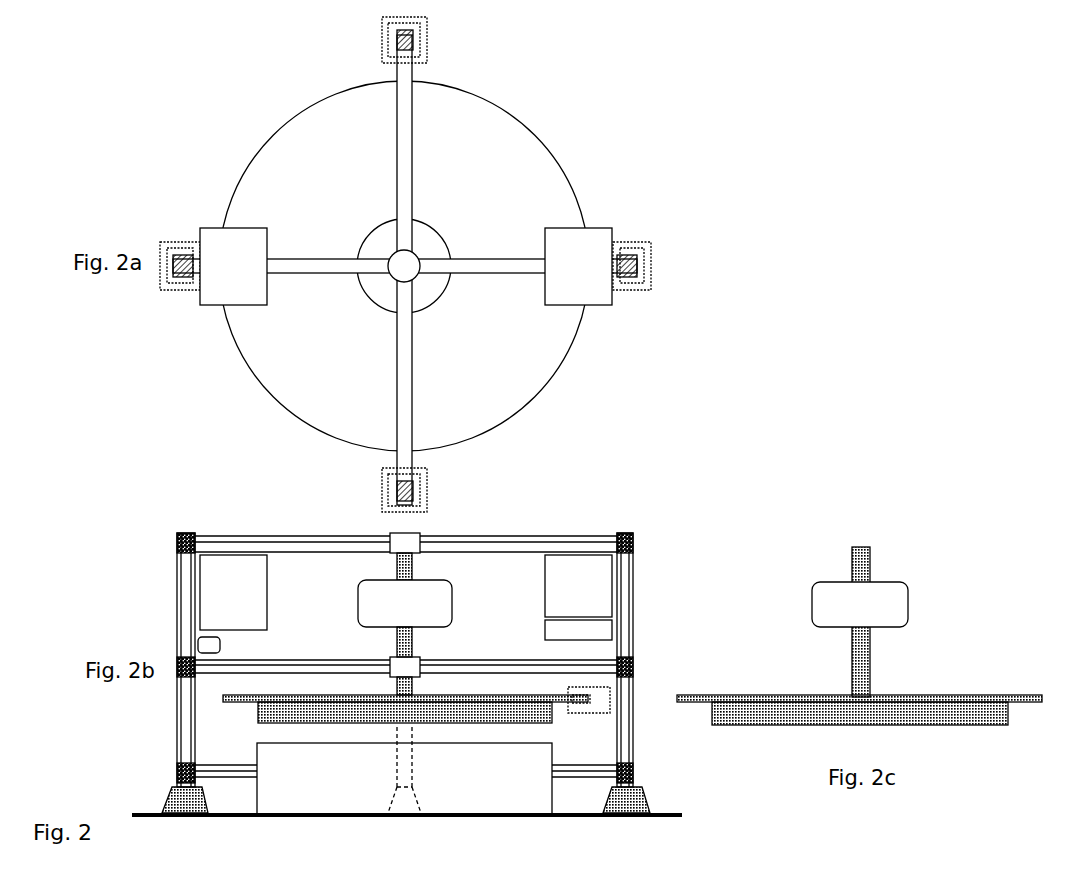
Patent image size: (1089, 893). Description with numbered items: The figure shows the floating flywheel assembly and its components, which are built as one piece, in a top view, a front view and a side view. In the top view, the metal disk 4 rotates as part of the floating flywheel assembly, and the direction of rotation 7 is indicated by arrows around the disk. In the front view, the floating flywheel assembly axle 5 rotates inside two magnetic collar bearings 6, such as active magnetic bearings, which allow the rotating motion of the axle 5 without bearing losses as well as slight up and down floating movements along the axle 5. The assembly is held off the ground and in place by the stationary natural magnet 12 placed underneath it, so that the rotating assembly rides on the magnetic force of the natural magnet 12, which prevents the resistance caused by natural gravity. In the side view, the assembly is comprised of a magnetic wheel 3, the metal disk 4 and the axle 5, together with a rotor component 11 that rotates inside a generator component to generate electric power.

In FIG. 2C, the magnetic wheel 3 is at (970, 736).
In FIG. 2A, the metal disk 4 is at (586, 340).
In FIG. 2B, the metal disk 4 is at (310, 684).
In FIG. 2C, the metal disk 4 is at (1025, 686).
In FIG. 2C, the axle 5 is at (860, 535).
In FIG. 2B, the magnetic collar bearings 6 is at (430, 532).
In FIG. 2A, the direction of rotation 7 is at (603, 186).
In FIG. 2C, the rotor component 11 is at (903, 572).
In FIG. 2B, the stationary natural magnet 12 is at (498, 755).